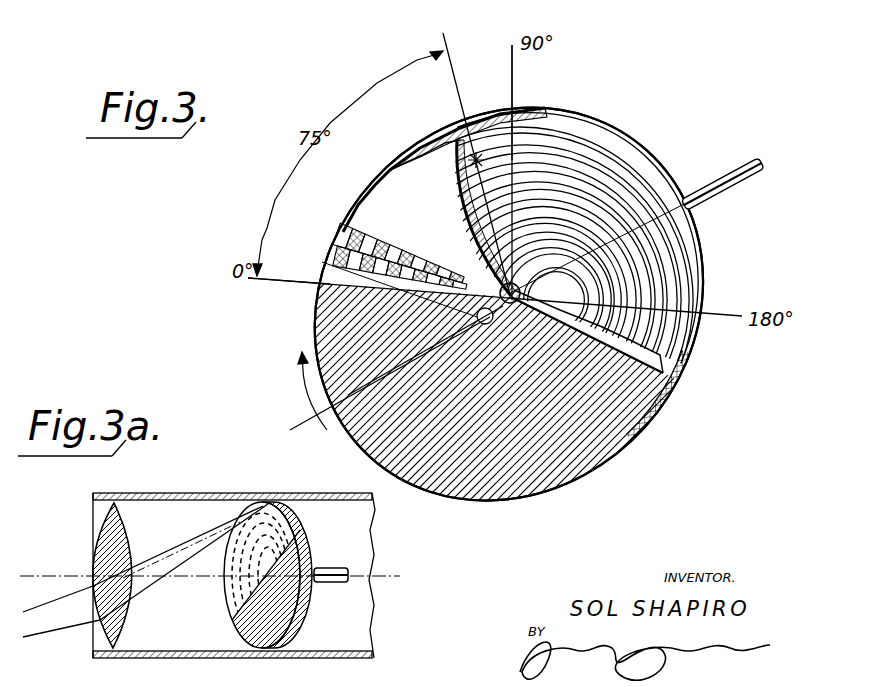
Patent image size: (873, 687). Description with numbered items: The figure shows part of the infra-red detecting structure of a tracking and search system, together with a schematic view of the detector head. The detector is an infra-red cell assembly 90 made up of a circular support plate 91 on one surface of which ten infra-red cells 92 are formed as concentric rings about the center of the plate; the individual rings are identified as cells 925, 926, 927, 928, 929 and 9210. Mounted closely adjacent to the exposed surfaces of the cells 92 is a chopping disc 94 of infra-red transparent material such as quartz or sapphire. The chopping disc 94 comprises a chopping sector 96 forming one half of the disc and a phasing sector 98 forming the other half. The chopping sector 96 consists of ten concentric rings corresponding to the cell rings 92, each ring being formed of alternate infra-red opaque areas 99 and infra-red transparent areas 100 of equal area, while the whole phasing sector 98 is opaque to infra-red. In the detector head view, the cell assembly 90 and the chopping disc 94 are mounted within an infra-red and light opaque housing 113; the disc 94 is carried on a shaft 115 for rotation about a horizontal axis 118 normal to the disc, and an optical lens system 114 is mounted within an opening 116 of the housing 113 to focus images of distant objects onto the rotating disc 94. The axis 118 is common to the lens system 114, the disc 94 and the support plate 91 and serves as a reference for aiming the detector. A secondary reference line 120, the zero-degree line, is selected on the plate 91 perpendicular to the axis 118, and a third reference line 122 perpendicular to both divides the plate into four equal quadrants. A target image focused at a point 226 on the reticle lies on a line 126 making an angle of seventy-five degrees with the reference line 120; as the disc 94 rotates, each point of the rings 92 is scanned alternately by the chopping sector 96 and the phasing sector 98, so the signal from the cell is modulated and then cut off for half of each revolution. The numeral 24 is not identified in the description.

In FIG. 3, the reference from adjacent figure 24 is at (274, 8).
In FIG. 3, the infra-red cell assembly 90 is at (672, 129).
In FIG. 3A, the infra-red cell assembly 90 is at (312, 530).
In FIG. 3, the support plate 91 is at (652, 173).
In FIG. 3A, the support plate 91 is at (313, 556).
In FIG. 3, the infra-red cells 92 is at (508, 304).
In FIG. 3, the infra-red cell 925 is at (600, 258).
In FIG. 3, the infra-red cell 926 is at (620, 265).
In FIG. 3, the infra-red cell 927 is at (640, 273).
In FIG. 3, the infra-red cell 928 is at (655, 285).
In FIG. 3, the infra-red cell 929 is at (672, 325).
In FIG. 3, the infra-red cell 9210 is at (680, 343).
In FIG. 3, the chopping disc 94 is at (372, 185).
In FIG. 3A, the chopping disc 94 is at (268, 504).
In FIG. 3, the chopping sector 96 is at (391, 169).
In FIG. 3, the phasing sector 98 is at (482, 498).
In FIG. 3, the infra-red opaque areas 99 is at (337, 238).
In FIG. 3, the infra-red transparent areas 100 is at (340, 268).
In FIG. 3A, the housing 113 is at (204, 495).
In FIG. 3A, the optical lens system 114 is at (104, 532).
In FIG. 3, the shaft 115 is at (752, 162).
In FIG. 3A, the shaft 115 is at (342, 584).
In FIG. 3A, the opening 116 is at (100, 640).
In FIG. 3, the horizontal axis 118 is at (290, 430).
In FIG. 3A, the horizontal axis 118 is at (48, 577).
In FIG. 3, the secondary reference line 120 is at (290, 284).
In FIG. 3, the third reference line 122 is at (515, 83).
In FIG. 3, the line 126 is at (442, 38).
In FIG. 3, the point 226 is at (479, 152).